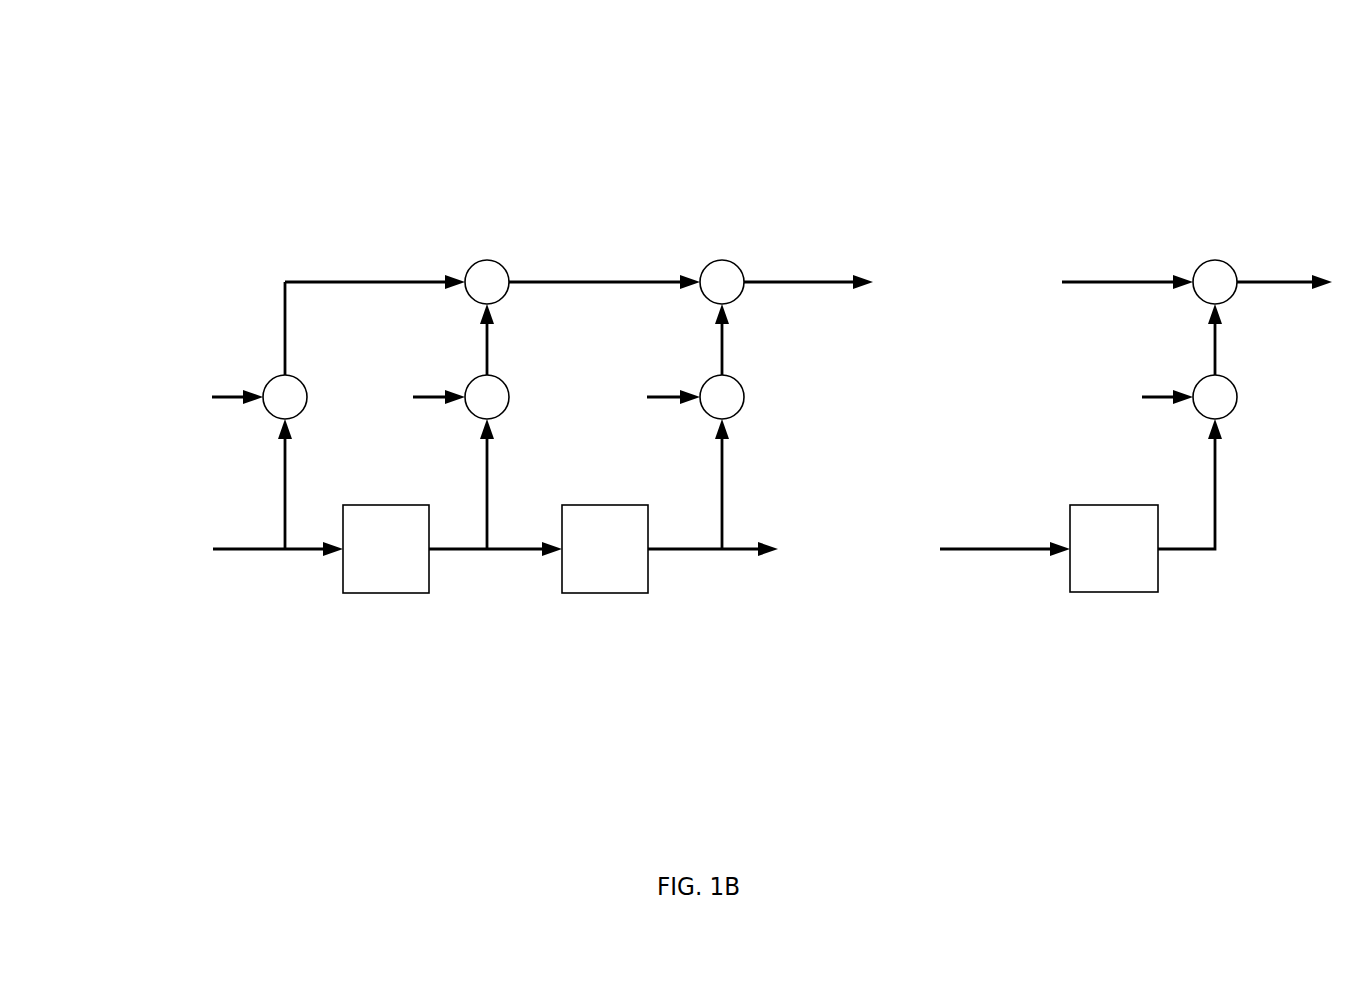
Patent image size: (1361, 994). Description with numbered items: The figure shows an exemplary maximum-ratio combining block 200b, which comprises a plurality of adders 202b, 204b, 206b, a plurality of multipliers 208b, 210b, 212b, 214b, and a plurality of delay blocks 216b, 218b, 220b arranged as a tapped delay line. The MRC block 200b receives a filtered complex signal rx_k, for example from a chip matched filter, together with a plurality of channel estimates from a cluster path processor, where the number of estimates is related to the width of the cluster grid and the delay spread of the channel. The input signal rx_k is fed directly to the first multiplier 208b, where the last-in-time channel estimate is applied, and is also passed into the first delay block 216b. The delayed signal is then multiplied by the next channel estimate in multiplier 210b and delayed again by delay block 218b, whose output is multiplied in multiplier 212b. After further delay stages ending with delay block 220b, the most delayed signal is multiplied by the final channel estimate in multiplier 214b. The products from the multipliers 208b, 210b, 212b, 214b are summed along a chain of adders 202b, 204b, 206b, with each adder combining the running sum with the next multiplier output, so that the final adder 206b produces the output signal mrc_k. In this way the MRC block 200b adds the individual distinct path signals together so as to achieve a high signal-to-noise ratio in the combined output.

The maximum-ratio combining (MRC) block 200b is at (278, 124).
The adder 202b is at (465, 290).
The adder 204b is at (700, 290).
The adder 206b is at (1193, 291).
The multiplier 208b is at (264, 409).
The multiplier 210b is at (466, 409).
The multiplier 212b is at (702, 410).
The multiplier 214b is at (1194, 409).
The delay block 216b is at (371, 594).
The delay block 218b is at (576, 594).
The delay block 220b is at (1087, 593).